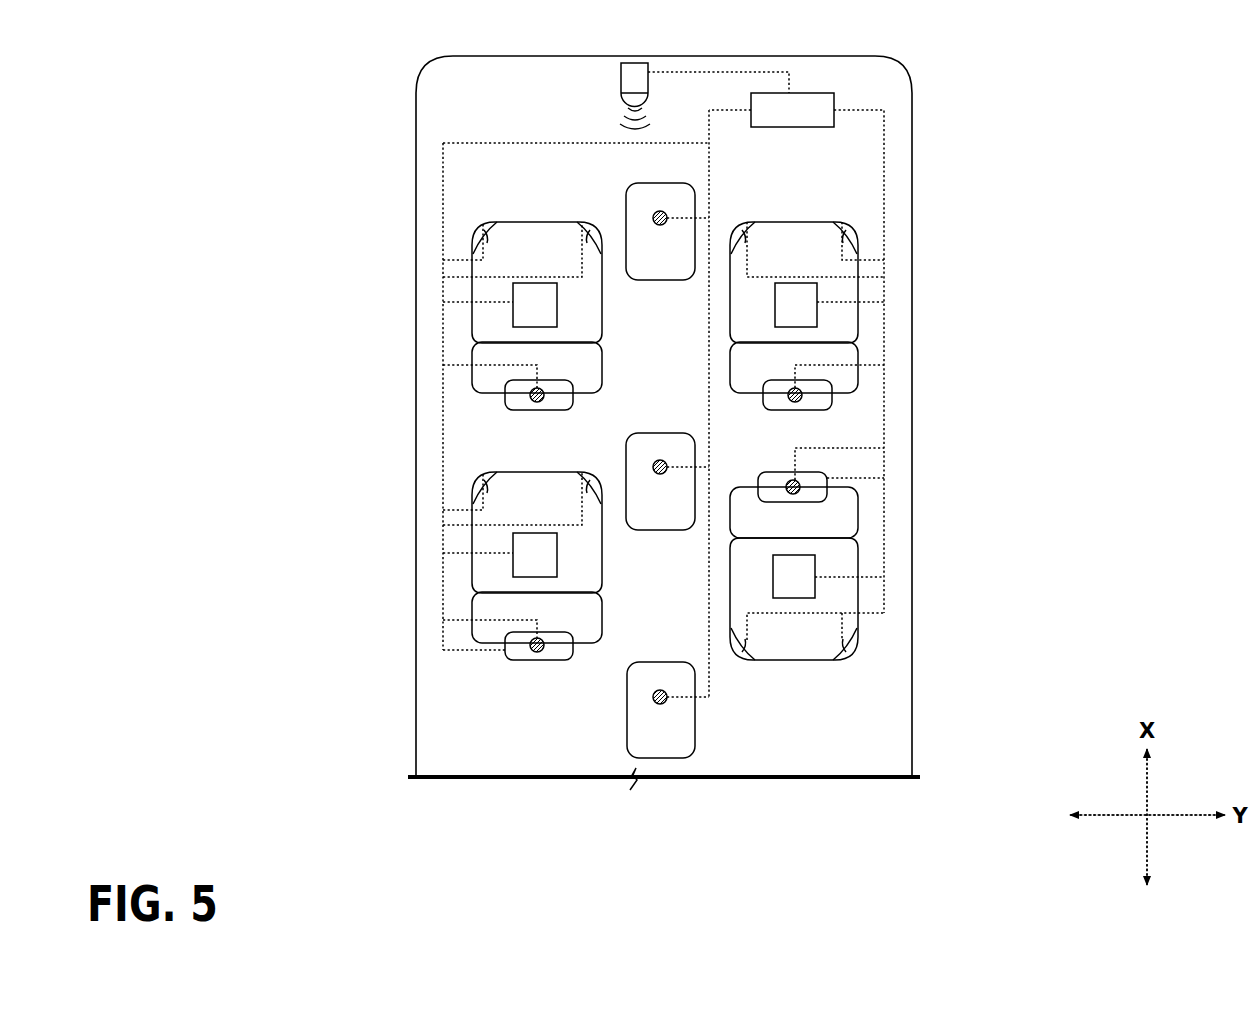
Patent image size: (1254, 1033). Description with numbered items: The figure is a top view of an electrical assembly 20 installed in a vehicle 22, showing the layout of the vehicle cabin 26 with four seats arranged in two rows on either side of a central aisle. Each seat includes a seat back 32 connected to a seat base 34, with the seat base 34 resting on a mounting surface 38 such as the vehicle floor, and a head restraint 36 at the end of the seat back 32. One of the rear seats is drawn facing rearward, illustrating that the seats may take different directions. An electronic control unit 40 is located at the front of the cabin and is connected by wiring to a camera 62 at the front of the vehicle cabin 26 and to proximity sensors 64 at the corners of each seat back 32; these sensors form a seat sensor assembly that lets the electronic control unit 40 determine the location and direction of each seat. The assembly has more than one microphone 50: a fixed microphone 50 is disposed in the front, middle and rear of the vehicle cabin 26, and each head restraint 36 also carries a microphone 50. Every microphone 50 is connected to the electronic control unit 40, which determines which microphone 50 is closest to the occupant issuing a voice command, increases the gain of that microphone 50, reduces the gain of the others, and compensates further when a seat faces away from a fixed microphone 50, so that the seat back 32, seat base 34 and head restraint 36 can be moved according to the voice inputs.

The electrical assembly 20 is at (999, 71).
The vehicle 22 is at (905, 72).
The vehicle cabin 26 is at (820, 722).
The seat back 32 is at (485, 352).
The seat base 34 is at (488, 288).
The head restraint 36 is at (558, 402).
The mounting surface 38 is at (518, 313).
The electronic control unit 40 is at (810, 93).
The microphone 50 is at (660, 225).
The camera 62 is at (640, 63).
The proximity sensor 64 is at (580, 232).